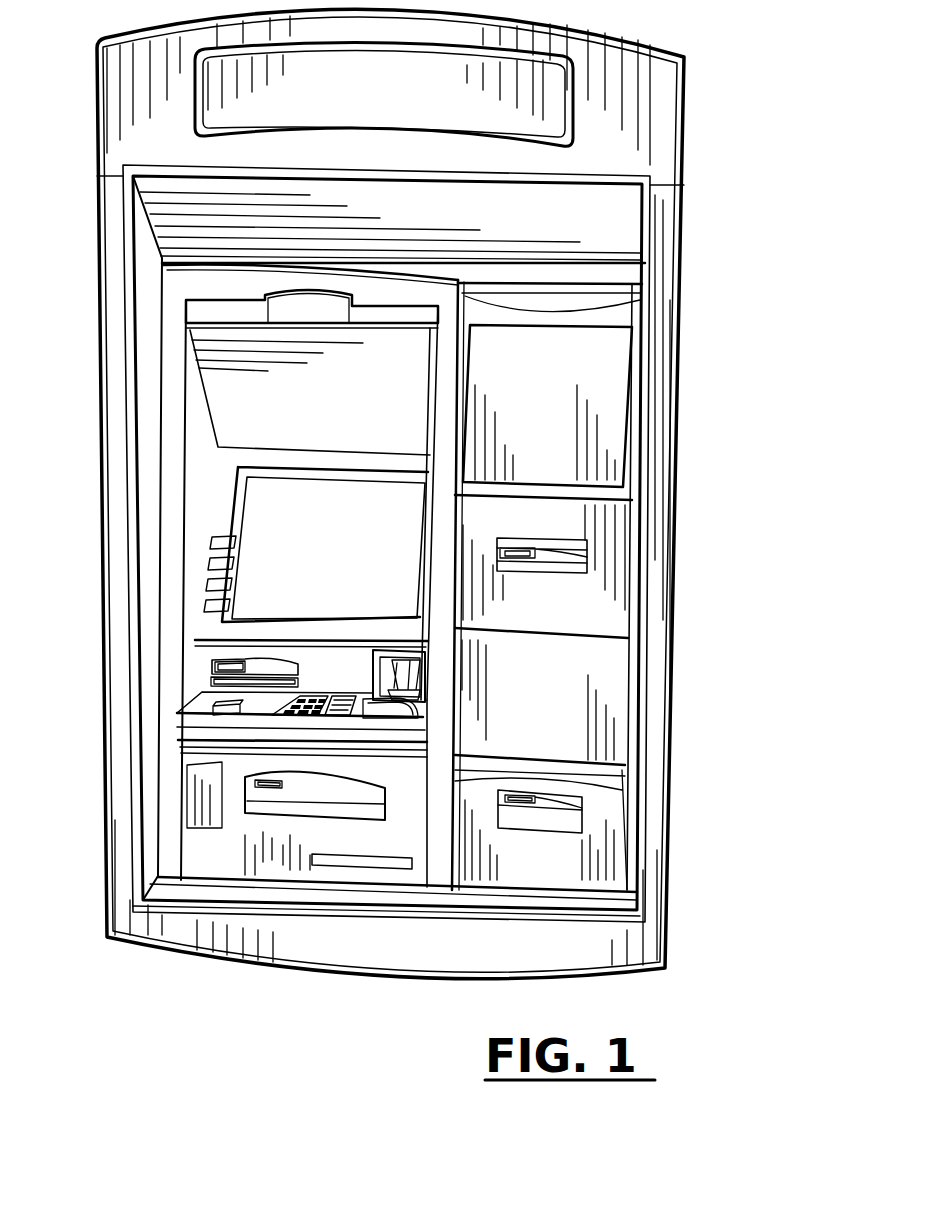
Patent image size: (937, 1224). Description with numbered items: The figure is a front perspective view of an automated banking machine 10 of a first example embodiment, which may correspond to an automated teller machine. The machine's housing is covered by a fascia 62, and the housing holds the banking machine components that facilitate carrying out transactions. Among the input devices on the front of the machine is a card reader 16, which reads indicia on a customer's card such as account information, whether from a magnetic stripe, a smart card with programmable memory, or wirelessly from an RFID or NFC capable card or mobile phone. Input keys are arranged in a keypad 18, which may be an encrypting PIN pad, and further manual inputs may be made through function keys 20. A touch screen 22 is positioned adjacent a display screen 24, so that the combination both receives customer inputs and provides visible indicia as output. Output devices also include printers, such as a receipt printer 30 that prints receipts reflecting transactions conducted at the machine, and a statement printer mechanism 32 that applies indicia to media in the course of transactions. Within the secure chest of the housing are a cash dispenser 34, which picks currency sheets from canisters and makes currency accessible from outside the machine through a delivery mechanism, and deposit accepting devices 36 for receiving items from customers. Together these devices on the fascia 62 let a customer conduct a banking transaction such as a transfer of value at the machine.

The automated banking machine 10 is at (703, 187).
The card reader 16 is at (405, 688).
The keypad 18 is at (292, 712).
The function keys 20 is at (203, 617).
The touch screen 22 is at (236, 579).
The display screen 24 is at (248, 527).
The receipt printer 30 is at (213, 662).
The statement printer mechanism 32 is at (587, 552).
The cash dispenser 34 is at (262, 805).
The deposit accepting devices 36 is at (565, 817).
The fascia 62 is at (624, 345).